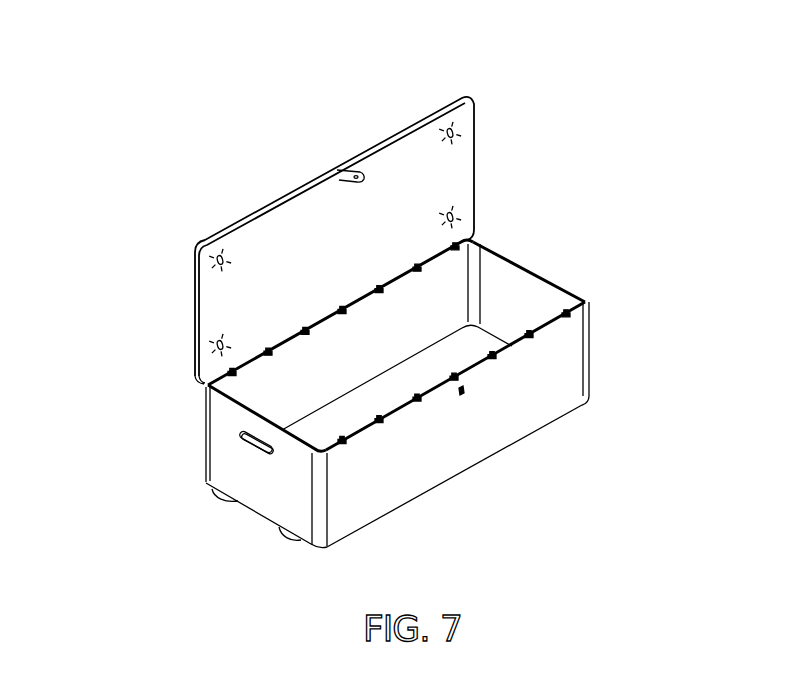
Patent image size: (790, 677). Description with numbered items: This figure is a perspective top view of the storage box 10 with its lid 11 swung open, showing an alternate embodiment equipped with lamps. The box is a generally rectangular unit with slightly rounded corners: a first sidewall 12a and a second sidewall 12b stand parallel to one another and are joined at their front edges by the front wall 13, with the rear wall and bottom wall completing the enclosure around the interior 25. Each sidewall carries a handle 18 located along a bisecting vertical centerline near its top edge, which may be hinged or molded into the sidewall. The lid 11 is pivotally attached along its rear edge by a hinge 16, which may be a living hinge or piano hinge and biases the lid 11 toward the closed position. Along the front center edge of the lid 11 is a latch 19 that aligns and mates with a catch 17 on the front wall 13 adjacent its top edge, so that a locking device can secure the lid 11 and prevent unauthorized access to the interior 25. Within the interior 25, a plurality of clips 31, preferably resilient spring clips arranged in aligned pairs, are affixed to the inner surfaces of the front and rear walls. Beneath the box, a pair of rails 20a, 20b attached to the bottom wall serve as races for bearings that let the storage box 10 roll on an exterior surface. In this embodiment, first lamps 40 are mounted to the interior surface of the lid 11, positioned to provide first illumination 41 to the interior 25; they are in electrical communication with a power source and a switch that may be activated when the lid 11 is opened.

The storage box 10 is at (178, 166).
The lid 11 is at (282, 195).
The first sidewall 12a is at (220, 432).
The second sidewall 12b is at (590, 332).
The front wall 13 is at (527, 405).
The hinge 16 is at (204, 383).
The catch 17 is at (463, 388).
The handle 18 is at (252, 443).
The latch 19 is at (358, 172).
The first rail 20a is at (228, 500).
The second rail 20b is at (290, 537).
The interior 25 is at (386, 346).
The clip 31 is at (266, 352).
The first lamp 40 is at (452, 128).
The first illumination 41 is at (438, 132).